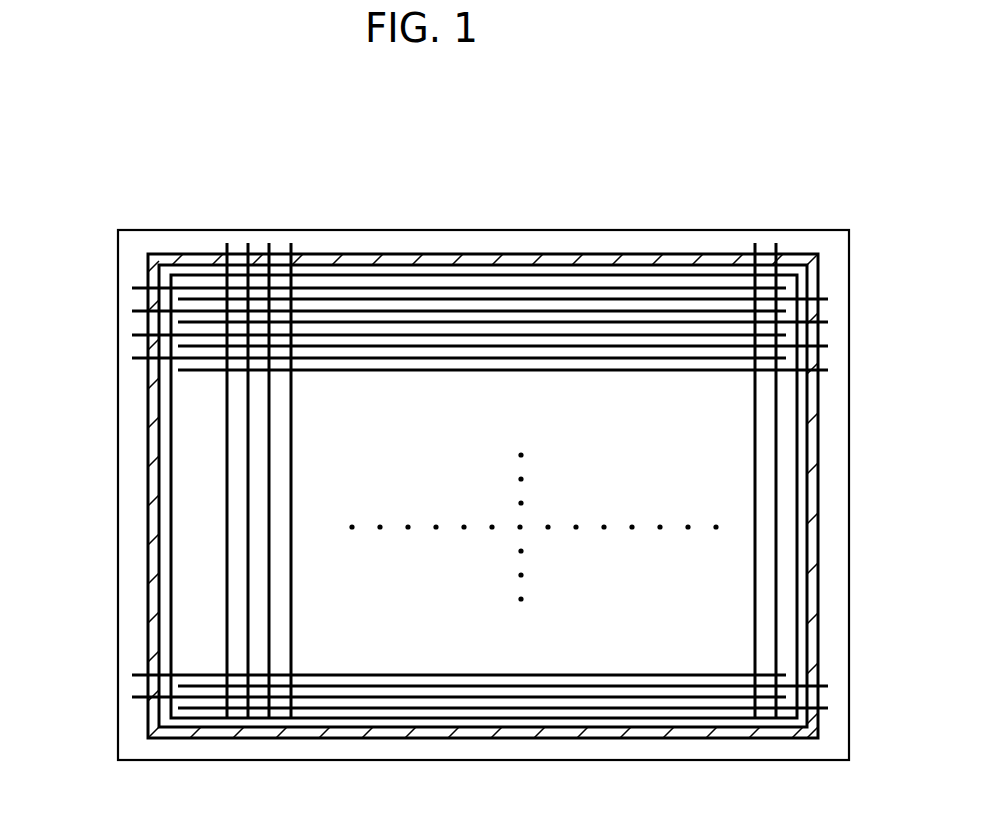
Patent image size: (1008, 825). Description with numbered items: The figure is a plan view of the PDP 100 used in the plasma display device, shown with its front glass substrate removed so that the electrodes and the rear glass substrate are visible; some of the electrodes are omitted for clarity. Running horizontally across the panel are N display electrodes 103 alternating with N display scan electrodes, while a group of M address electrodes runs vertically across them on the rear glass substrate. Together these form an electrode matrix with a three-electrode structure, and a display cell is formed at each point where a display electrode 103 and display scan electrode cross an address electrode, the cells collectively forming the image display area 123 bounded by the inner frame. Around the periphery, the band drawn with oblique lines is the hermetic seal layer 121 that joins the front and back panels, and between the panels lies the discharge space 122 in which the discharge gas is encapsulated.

The PDP 100 is at (850, 527).
The display electrode 103 is at (179, 372).
The hermetic seal layer 121 is at (467, 259).
The discharge space 122 is at (577, 405).
The image display area 123 is at (170, 512).